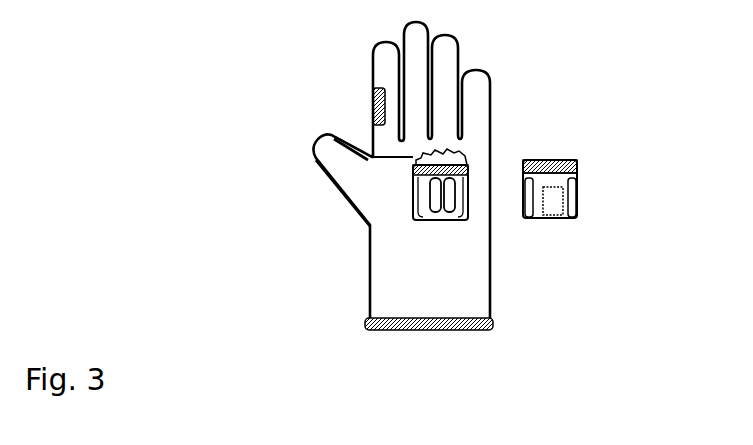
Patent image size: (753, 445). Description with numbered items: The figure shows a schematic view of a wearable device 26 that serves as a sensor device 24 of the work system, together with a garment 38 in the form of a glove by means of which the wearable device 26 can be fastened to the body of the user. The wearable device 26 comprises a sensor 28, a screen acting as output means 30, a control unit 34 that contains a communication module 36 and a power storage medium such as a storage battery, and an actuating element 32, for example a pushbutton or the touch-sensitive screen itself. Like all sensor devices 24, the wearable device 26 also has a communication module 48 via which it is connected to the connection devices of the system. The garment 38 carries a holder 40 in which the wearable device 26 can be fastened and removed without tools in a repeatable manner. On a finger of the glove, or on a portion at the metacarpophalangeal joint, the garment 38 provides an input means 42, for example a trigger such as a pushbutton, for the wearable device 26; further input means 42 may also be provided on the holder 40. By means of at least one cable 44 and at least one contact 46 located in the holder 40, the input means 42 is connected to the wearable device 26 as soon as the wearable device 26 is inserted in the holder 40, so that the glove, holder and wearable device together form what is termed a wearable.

The sensor device 24 is at (553, 222).
The wearable device 26 is at (577, 216).
The sensor 28 is at (576, 170).
The output means 30 is at (573, 200).
The actuating element 32 is at (376, 108).
The control unit 34 is at (537, 160).
The communication module 36 is at (544, 197).
The garment 38 is at (388, 280).
The holder 40 is at (447, 222).
The input means 42 is at (379, 106).
The cable 44 is at (392, 157).
The contact 46 is at (442, 170).
The communication module 48 is at (540, 220).